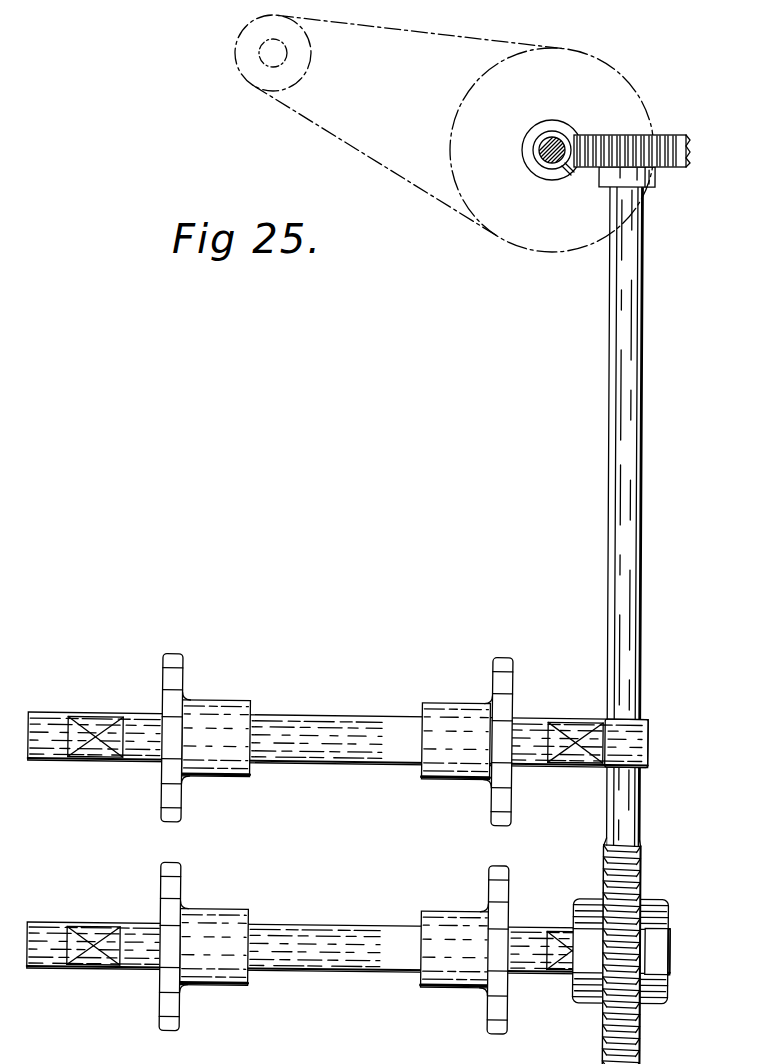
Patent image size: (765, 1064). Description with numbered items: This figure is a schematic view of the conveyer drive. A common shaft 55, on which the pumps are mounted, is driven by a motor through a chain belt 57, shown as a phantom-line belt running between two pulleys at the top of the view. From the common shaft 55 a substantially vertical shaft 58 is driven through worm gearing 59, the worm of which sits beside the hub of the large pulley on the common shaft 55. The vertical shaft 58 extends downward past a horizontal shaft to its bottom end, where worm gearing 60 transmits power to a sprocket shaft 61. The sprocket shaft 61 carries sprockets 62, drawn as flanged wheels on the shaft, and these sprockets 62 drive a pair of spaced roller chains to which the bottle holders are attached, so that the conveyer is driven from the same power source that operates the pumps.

The common shaft 55 is at (540, 148).
The chain belt 57 is at (386, 170).
The vertical shaft 58 is at (621, 361).
The worm gearing 59 is at (605, 135).
The worm gearing 60 is at (606, 875).
The sprocket shaft 61 is at (346, 957).
The sprockets 62 is at (172, 893).